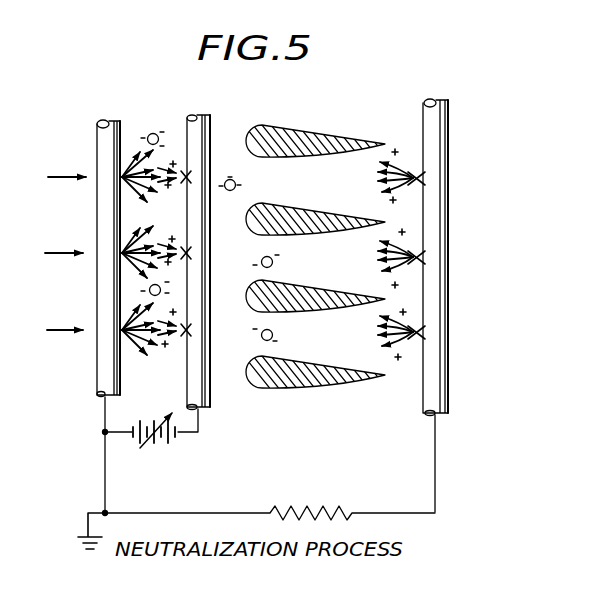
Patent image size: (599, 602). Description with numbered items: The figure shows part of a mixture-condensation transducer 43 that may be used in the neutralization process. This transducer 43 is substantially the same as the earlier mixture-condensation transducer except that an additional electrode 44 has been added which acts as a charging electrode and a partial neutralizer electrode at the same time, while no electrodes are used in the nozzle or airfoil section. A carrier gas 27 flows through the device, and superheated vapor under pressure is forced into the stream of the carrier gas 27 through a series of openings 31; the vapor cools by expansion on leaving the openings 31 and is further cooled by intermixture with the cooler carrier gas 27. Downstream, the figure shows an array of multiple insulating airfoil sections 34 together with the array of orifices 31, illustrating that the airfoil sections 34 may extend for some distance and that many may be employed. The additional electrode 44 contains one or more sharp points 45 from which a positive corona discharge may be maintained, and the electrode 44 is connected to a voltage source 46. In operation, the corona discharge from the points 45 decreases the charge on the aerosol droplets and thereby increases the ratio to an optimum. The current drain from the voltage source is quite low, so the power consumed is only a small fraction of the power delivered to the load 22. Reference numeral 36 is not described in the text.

The load 22 is at (359, 487).
The carrier gas 27 is at (55, 180).
The openings 31 is at (118, 338).
The airfoil sections 34 is at (308, 203).
The attractor electrode 36 is at (420, 174).
The transducer 43 is at (80, 128).
The additional electrode 44 is at (212, 264).
The sharp points 45 is at (182, 247).
The voltage source 46 is at (148, 450).